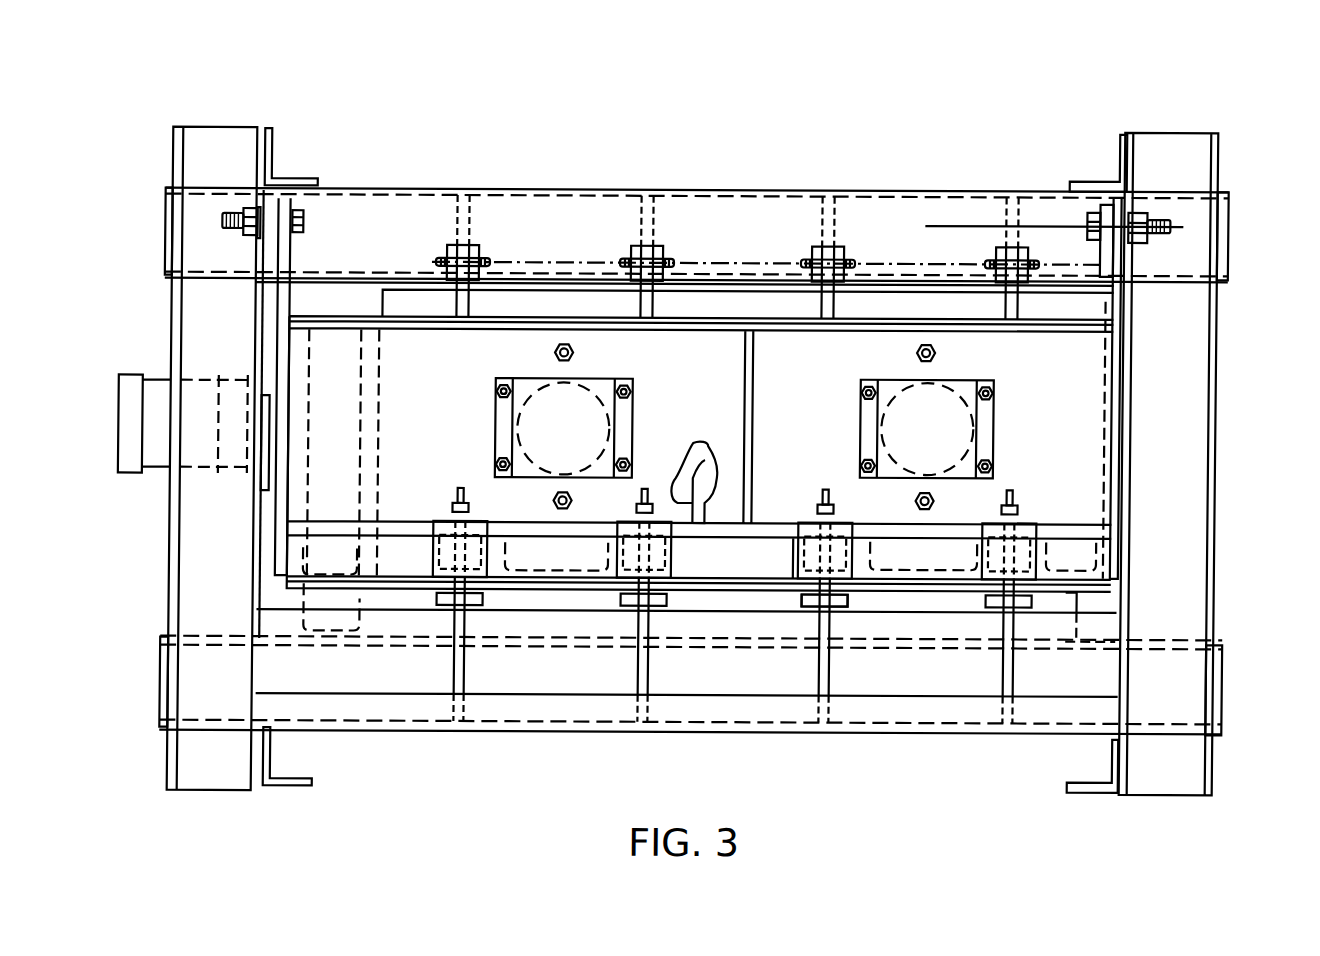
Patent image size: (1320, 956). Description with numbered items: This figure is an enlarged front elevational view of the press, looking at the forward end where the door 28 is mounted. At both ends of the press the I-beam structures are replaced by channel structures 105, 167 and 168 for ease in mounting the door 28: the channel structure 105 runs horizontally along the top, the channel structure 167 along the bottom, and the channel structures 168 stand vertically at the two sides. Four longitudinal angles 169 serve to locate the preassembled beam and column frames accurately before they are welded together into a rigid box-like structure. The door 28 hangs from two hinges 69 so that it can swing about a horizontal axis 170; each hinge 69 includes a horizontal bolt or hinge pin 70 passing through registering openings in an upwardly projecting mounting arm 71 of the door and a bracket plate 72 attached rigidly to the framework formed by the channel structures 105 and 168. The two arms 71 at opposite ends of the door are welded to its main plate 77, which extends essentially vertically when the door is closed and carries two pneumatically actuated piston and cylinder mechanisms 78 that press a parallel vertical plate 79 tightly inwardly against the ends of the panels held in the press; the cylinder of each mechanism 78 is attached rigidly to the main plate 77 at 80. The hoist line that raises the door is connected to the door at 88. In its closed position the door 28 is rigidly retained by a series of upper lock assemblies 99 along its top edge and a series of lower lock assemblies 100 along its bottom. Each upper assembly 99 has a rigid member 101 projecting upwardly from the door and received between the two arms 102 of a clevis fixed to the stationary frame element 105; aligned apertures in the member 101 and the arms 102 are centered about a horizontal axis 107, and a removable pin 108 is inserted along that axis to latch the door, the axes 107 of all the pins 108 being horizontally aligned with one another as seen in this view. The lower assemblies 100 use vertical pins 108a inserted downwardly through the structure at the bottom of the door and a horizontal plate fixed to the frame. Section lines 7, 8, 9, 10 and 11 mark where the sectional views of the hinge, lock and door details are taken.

The door 28 is at (1072, 452).
The hinges 69 is at (309, 212).
The horizontal bolt or hinge pin 70 is at (230, 192).
The mounting arm 71 is at (287, 257).
The bracket plate 72 is at (267, 260).
The main plate 77 is at (1082, 371).
The piston and cylinder mechanisms 78 is at (589, 428).
The vertical plate 79 is at (378, 403).
The cylinder attachment 80 is at (621, 384).
The line connection 88 is at (702, 473).
The upper lock assemblies 99 is at (485, 238).
The lower lock assemblies 100 is at (1027, 519).
The rigid member 101 is at (459, 304).
The clevis arms 102 is at (677, 228).
The channel structure 105 is at (601, 189).
The horizontal axis 107 is at (889, 263).
The pin 108 is at (679, 263).
The vertical pins 108a is at (827, 616).
The channel structure 167 is at (505, 716).
The channel structure 168 is at (167, 314).
The longitudinal angles 169 is at (270, 147).
The horizontal axis 170 is at (955, 227).
The section line 7- 7 is at (592, 561).
The section line 8- 8 is at (494, 344).
The section line 9- 9 is at (1036, 674).
The section line 10- 10 is at (1088, 664).
The section line 11- 11 is at (1045, 225).